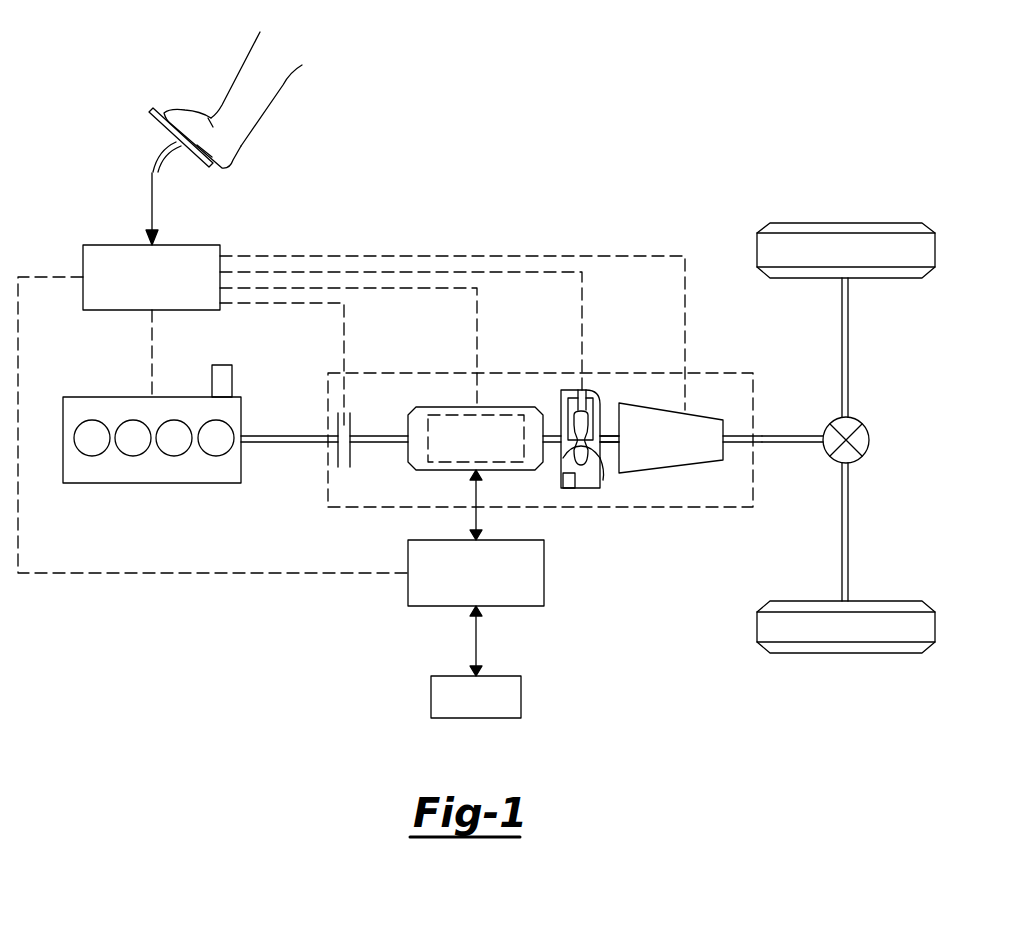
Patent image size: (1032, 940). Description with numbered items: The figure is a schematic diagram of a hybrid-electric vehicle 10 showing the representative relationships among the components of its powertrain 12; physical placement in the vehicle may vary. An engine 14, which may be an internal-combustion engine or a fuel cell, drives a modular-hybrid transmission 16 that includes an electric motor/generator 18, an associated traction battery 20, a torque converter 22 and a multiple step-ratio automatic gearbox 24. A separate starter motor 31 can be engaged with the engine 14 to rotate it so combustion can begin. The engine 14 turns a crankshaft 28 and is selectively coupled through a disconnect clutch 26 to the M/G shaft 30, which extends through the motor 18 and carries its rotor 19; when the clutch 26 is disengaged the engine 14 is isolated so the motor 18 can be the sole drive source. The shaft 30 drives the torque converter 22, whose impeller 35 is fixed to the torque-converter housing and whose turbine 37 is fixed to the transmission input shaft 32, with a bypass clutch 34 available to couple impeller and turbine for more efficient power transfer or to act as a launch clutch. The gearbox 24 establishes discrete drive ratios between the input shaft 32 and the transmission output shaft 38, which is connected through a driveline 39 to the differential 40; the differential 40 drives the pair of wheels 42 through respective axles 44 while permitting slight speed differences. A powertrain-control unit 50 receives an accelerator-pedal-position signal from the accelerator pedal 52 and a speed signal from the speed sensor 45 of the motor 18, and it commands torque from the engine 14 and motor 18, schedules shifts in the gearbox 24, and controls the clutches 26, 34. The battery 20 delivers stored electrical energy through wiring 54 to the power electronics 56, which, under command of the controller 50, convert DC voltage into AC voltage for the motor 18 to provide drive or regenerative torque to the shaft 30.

The hybrid-electric vehicle 10 is at (699, 157).
The powertrain 12 is at (278, 613).
The engine 14 is at (78, 397).
The transmission 16 is at (514, 373).
The electric motor/generator 18 is at (455, 407).
The rotor 19 is at (442, 470).
The traction battery 20 is at (431, 697).
The torque converter 22 is at (576, 490).
The gearbox 24 is at (660, 475).
The disconnect clutch 26 is at (345, 468).
The crankshaft 28 is at (312, 434).
The M/G shaft 30 is at (385, 434).
The starter motor 31 is at (232, 380).
The transmission input shaft 32 is at (605, 432).
The torque converter bypass clutch 34 is at (581, 392).
The impeller 35 is at (603, 465).
The turbine 37 is at (563, 456).
The transmission output shaft 38 is at (740, 434).
The drive shaft 39 is at (785, 434).
The differential 40 is at (870, 438).
The wheels 42 is at (810, 223).
The axles 44 is at (848, 345).
The speed sensor 45 is at (568, 488).
The powertrain-control unit 50 is at (96, 245).
The accelerator pedal 52 is at (152, 128).
The wiring 54 is at (475, 640).
The power electronics 56 is at (544, 575).